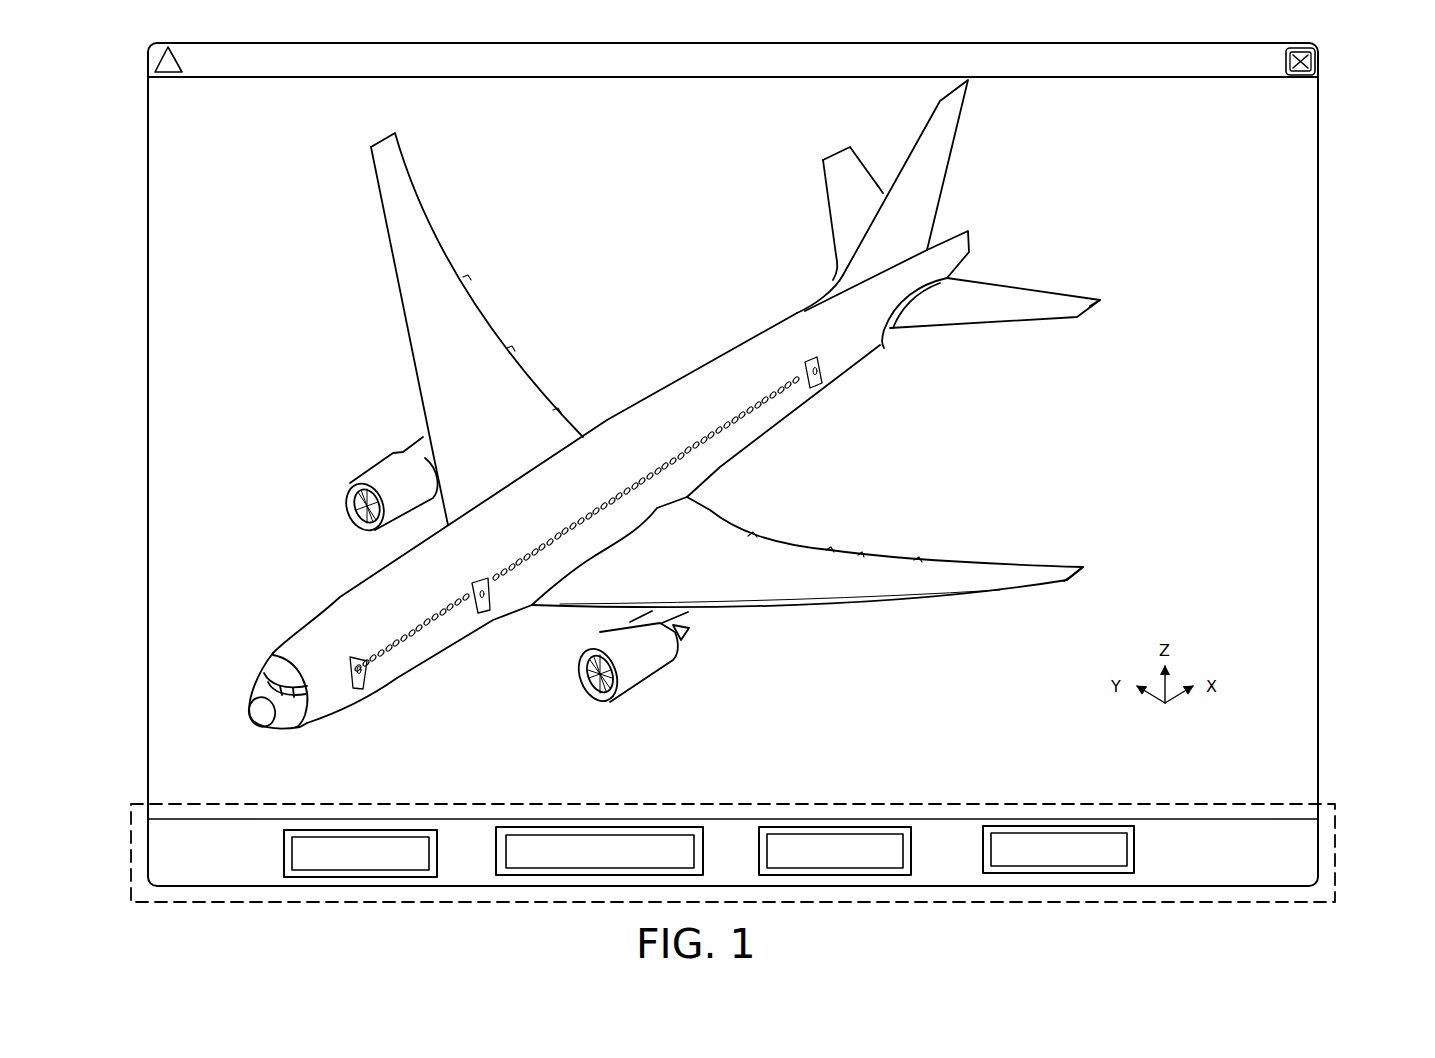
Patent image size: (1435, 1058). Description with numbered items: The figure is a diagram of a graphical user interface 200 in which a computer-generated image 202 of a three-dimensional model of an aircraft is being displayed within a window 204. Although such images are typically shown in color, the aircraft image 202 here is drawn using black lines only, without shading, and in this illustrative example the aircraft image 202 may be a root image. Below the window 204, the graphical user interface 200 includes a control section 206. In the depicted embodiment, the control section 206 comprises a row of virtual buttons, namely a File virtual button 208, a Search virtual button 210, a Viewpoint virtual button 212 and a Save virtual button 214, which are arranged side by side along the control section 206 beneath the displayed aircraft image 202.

The graphical user interface 200 is at (1322, 178).
The computer-generated image 202 is at (640, 332).
The window 204 is at (711, 120).
The control section 206 is at (948, 800).
The File virtual button 208 is at (1113, 870).
The Search virtual button 210 is at (838, 877).
The Viewpoint virtual button 212 is at (576, 877).
The Save virtual button 214 is at (372, 878).